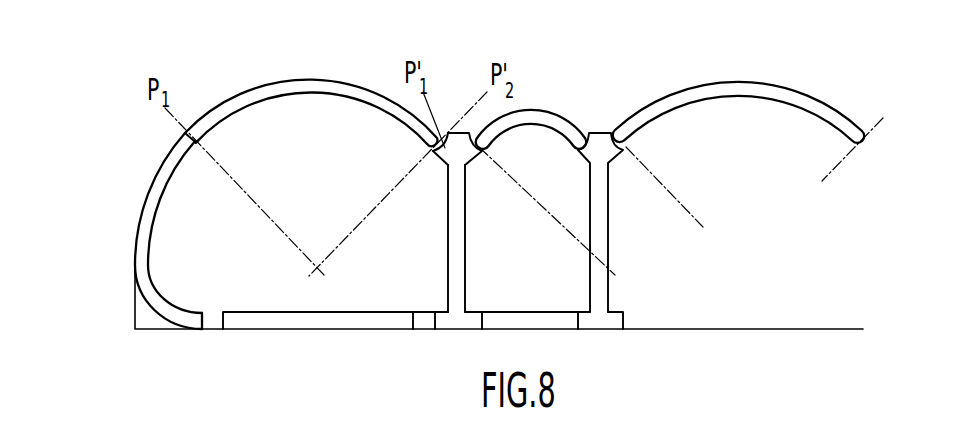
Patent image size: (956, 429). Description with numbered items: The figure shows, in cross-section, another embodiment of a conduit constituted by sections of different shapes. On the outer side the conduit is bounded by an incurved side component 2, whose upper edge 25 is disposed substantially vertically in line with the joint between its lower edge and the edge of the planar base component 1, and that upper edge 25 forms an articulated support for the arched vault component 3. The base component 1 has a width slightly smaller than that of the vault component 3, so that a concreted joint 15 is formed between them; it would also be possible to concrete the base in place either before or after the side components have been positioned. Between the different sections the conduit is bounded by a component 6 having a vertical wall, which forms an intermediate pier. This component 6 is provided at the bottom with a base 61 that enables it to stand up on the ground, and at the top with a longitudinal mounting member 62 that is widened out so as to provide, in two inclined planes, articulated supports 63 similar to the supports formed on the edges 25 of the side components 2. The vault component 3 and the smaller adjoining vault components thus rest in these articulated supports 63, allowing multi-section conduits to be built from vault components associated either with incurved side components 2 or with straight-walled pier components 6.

The base component 1 is at (277, 321).
The side component 2 is at (147, 207).
The vault component 3 is at (298, 80).
The component having a vertical wall 6 is at (421, 217).
The concreted joint 15 is at (213, 322).
The upper edge 25 is at (189, 137).
The base 61 is at (447, 322).
The longitudinal mounting member 62 is at (421, 175).
The articulated support 63 is at (434, 145).